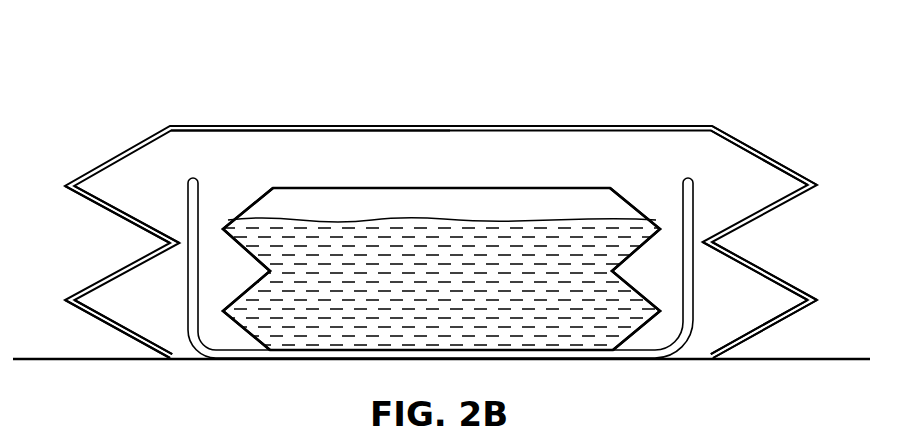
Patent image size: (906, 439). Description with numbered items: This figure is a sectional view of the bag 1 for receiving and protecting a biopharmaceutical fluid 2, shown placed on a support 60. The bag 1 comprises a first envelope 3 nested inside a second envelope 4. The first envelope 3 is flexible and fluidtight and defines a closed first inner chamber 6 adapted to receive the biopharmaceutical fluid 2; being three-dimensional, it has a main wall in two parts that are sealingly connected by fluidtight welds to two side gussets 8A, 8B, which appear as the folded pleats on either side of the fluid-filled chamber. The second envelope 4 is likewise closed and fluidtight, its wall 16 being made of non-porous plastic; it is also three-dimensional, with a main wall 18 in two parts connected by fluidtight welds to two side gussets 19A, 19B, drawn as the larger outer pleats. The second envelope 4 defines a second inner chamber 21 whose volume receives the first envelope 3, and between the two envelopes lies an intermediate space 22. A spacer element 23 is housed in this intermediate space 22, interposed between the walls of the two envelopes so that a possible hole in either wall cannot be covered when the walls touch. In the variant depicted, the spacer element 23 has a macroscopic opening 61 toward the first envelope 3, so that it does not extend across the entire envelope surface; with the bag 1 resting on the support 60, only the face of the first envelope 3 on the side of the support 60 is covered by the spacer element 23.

The bag 1 is at (738, 91).
The biopharmaceutical fluid 2 is at (475, 258).
The first envelope 3 is at (632, 218).
The second envelope 4 is at (783, 163).
The first inner chamber 6 is at (545, 205).
The side gusset 8A is at (613, 270).
The side gusset 8B is at (250, 256).
The wall 16 is at (777, 325).
The main wall 18 is at (600, 360).
The side gusset 19A is at (782, 282).
The side gusset 19B is at (105, 323).
The second inner chamber 21 is at (208, 150).
The intermediate space 22 is at (288, 150).
The spacer element 23 is at (190, 268).
The support 60 is at (848, 357).
The opening 61 is at (398, 150).